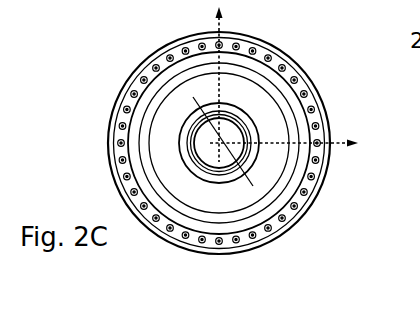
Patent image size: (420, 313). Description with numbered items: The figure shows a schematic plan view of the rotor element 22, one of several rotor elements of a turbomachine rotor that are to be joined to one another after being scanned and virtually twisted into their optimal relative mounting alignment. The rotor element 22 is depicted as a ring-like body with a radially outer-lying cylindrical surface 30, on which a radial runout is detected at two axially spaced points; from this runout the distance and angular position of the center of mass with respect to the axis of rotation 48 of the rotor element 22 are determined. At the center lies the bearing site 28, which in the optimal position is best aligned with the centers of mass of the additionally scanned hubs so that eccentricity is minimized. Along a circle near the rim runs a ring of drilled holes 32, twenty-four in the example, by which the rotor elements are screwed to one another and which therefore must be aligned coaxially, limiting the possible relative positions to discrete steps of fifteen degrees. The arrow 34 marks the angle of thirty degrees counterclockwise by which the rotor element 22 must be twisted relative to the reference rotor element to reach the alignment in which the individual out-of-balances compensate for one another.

The rotor element 22 is at (306, 216).
The bearing site 28 is at (207, 151).
The radially outer-lying cylindrical surface 30 is at (333, 116).
The drilled holes 32 is at (297, 68).
The arrow 34 is at (194, 93).
The axis of rotation 48 is at (253, 186).